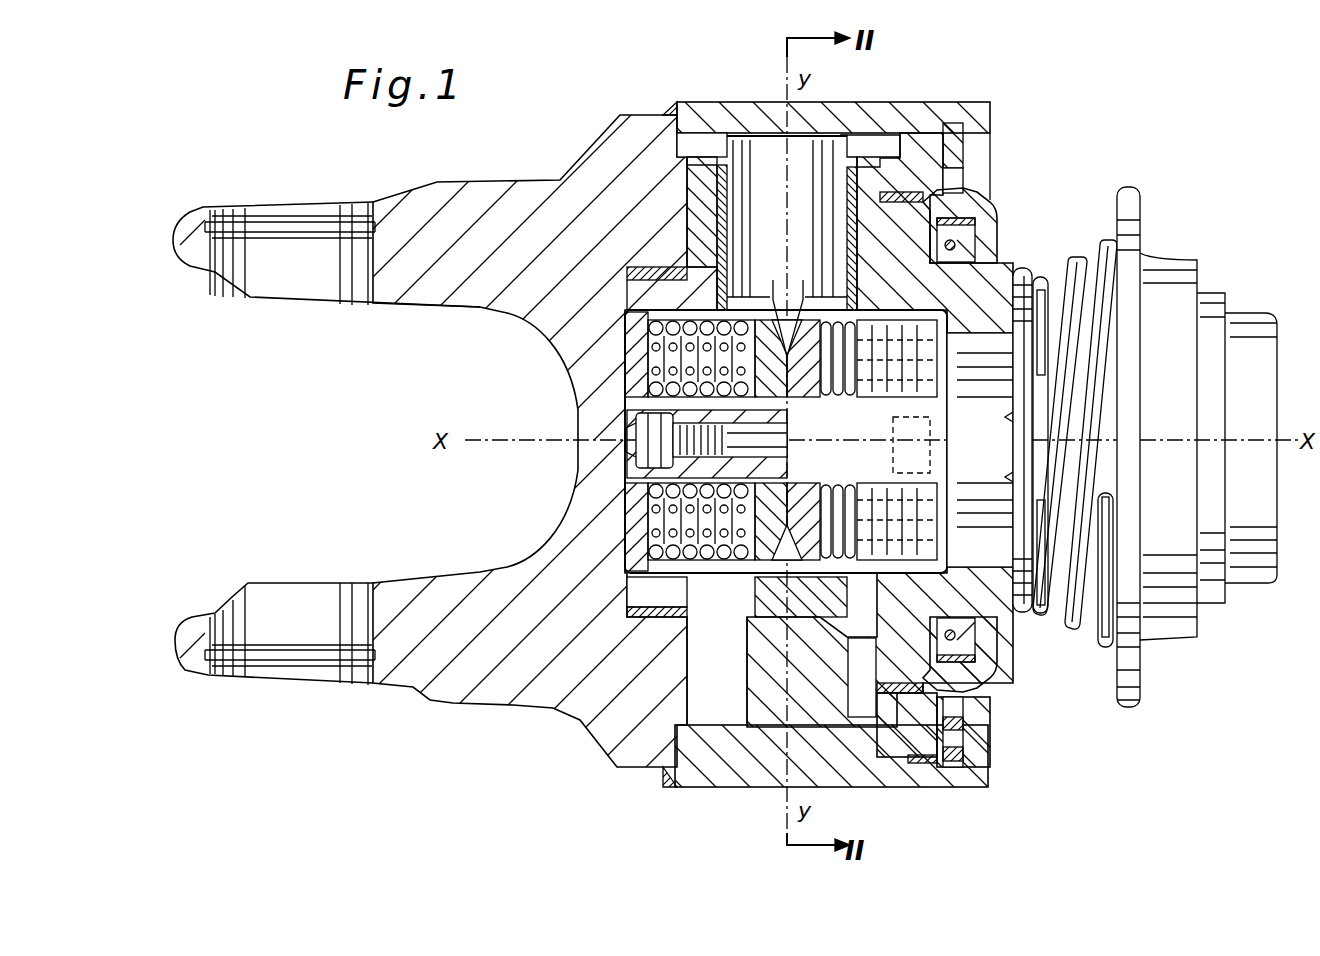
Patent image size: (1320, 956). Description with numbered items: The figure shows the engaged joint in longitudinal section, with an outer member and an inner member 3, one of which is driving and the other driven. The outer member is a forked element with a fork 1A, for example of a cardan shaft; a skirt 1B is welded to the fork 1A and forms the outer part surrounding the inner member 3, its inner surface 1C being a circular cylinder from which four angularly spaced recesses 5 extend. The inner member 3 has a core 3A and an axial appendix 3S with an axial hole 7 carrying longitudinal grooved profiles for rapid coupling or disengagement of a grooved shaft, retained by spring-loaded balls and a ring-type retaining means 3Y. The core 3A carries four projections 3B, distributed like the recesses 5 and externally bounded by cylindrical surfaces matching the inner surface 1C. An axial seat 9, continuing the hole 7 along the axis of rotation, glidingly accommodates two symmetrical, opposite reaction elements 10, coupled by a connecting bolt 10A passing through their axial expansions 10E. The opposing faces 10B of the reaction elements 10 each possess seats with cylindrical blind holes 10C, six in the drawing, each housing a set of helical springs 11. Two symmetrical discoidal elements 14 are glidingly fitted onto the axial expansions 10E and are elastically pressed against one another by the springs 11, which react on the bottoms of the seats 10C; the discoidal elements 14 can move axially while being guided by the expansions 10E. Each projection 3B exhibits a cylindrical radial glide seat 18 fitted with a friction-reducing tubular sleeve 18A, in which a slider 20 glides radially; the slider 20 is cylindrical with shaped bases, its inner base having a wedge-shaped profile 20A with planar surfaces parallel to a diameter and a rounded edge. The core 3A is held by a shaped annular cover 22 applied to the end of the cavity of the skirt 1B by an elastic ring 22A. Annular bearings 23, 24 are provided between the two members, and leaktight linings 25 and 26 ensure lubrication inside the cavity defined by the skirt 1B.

The fork 1A is at (427, 198).
The skirt 1B is at (713, 112).
The inner surface 1C is at (745, 720).
The inner member 3 is at (1010, 257).
The core 3A is at (626, 293).
The projections 3B is at (697, 232).
The axial appendix 3S is at (1208, 595).
The ring-type retaining means 3Y is at (1135, 210).
The recess 5 is at (673, 148).
The axial hole 7 is at (972, 325).
The axial seat 9 is at (880, 312).
The reaction elements 10 is at (650, 560).
The connecting bolt 10A is at (627, 453).
The opposing faces 10B is at (893, 407).
The cylindrical blind hole 10C is at (645, 350).
The axial expansions 10E is at (770, 446).
The helical springs 11 is at (730, 322).
The discoidal elements 14 is at (768, 567).
The cylindrical radial glide seat 18 is at (727, 205).
The tubular sleeve 18A is at (727, 248).
The slider 20 is at (807, 207).
The wedge-shaped profile 20A is at (792, 312).
The shaped annular cover 22 is at (980, 207).
The elastic ring 22A is at (957, 150).
The annular bearing 23 is at (660, 615).
The annular bearing 24 is at (897, 690).
The leaktight lining 25 is at (947, 715).
The leaktight lining 26 is at (990, 647).